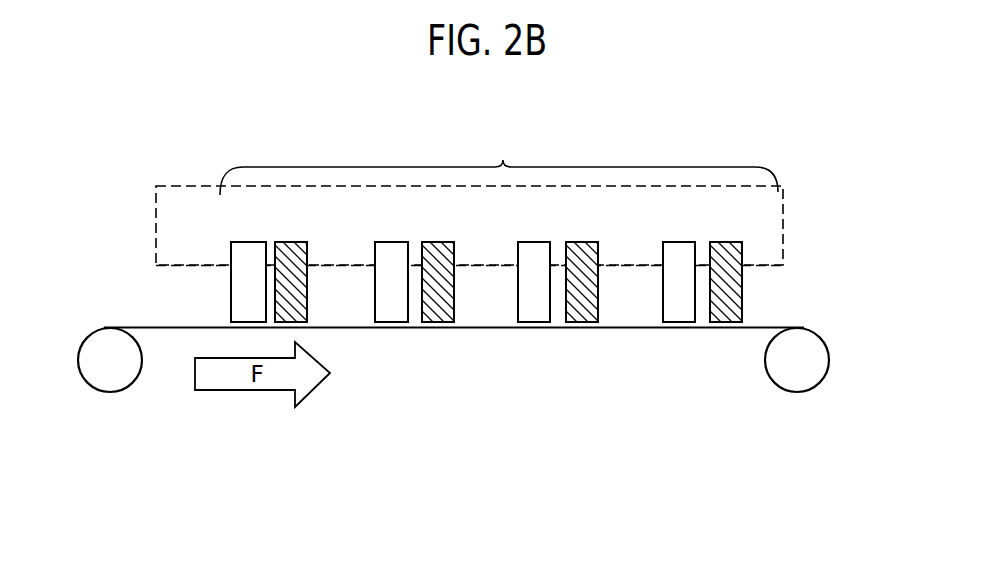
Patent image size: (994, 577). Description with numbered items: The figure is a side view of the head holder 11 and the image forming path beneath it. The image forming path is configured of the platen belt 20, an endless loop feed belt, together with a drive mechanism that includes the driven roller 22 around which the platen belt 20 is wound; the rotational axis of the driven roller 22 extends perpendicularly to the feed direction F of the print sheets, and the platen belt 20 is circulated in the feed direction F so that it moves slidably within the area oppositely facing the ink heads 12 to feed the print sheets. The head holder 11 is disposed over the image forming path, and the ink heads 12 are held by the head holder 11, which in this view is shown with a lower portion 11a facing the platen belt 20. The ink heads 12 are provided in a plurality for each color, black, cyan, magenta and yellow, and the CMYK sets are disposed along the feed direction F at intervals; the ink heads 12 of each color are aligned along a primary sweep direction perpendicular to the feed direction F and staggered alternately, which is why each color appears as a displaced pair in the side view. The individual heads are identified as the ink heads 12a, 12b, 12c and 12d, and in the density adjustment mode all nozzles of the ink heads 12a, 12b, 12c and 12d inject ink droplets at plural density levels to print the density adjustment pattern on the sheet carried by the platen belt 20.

The head holder 11 is at (785, 231).
The bottom surface of housing 11a is at (762, 266).
The ink heads 12 is at (499, 164).
The ink head 12a is at (392, 242).
The ink head 12b is at (535, 242).
The ink head 12c is at (683, 242).
The ink head 12d is at (275, 305).
The platen belt 20 is at (438, 330).
The driven roller 22 is at (797, 392).